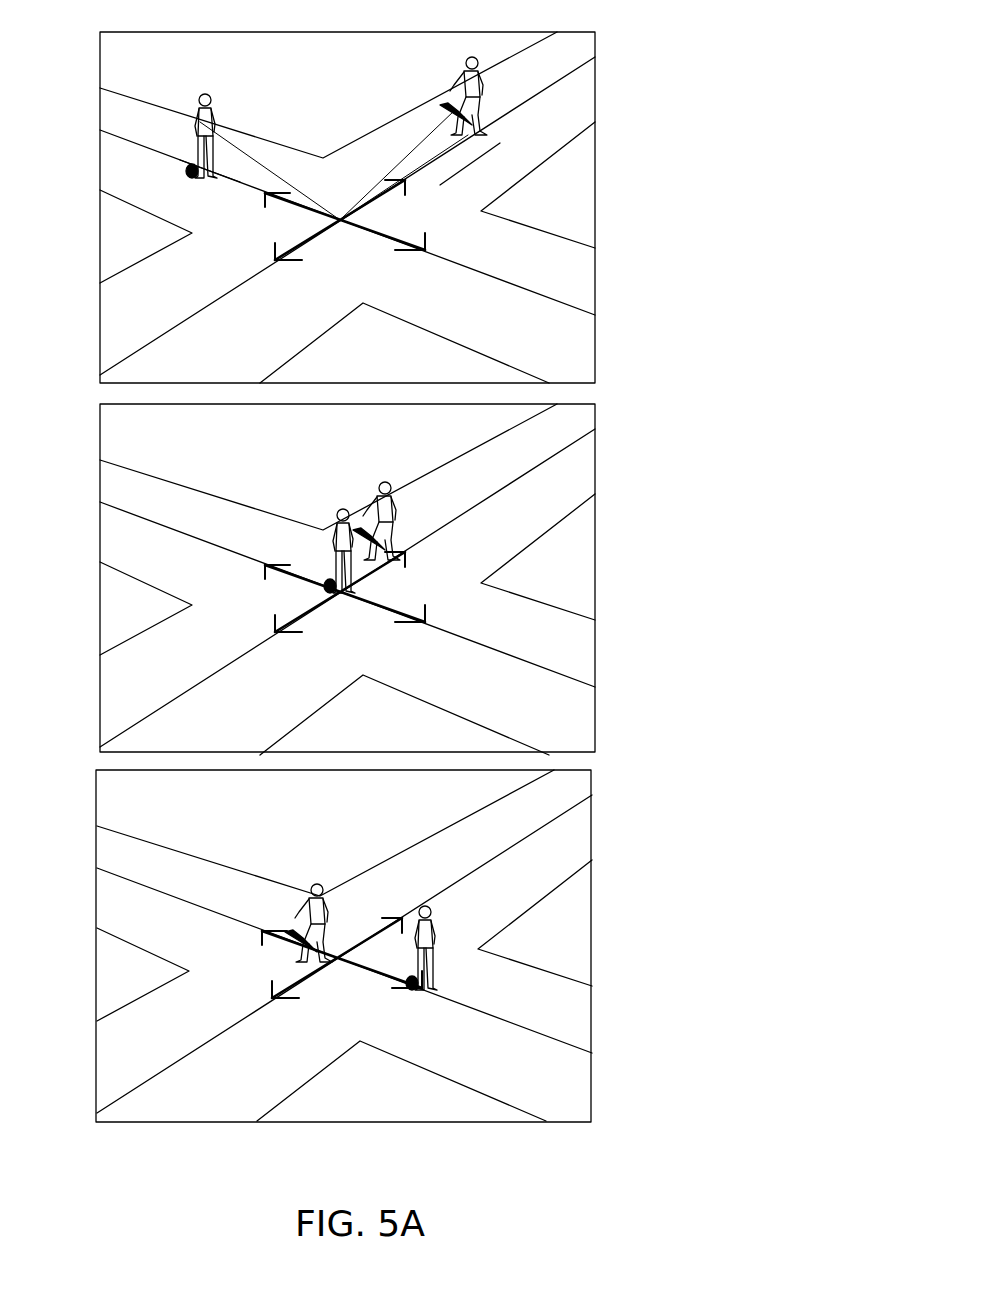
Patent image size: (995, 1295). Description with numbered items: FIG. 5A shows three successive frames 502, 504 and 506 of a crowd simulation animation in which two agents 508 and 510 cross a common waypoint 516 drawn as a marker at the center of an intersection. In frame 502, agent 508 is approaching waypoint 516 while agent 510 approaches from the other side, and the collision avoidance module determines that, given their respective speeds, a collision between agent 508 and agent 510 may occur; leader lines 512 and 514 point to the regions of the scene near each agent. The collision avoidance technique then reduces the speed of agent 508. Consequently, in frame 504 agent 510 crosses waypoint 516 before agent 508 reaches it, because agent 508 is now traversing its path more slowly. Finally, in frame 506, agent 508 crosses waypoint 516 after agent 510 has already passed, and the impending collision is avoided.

The frame 502 is at (513, 32).
The frame 504 is at (520, 404).
The frame 506 is at (530, 770).
The agent 508 is at (477, 60).
The agent 510 is at (197, 92).
The crosswalk region 512 is at (455, 152).
The sidewalk region 514 is at (228, 180).
The waypoint 516 is at (340, 222).